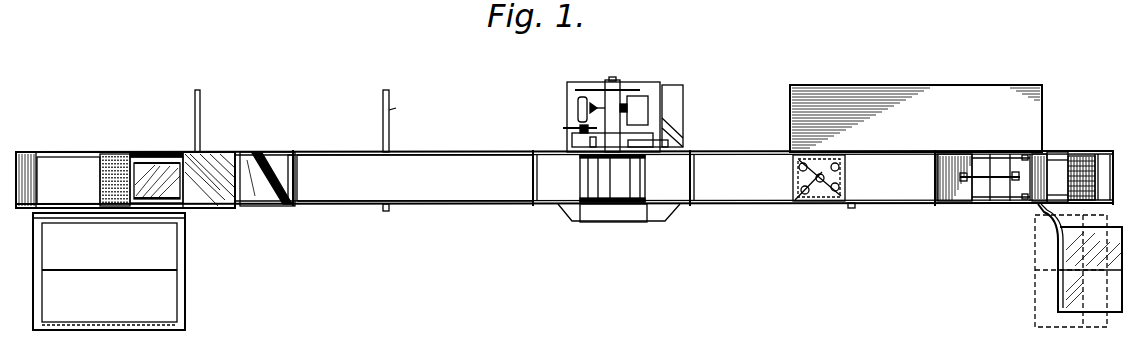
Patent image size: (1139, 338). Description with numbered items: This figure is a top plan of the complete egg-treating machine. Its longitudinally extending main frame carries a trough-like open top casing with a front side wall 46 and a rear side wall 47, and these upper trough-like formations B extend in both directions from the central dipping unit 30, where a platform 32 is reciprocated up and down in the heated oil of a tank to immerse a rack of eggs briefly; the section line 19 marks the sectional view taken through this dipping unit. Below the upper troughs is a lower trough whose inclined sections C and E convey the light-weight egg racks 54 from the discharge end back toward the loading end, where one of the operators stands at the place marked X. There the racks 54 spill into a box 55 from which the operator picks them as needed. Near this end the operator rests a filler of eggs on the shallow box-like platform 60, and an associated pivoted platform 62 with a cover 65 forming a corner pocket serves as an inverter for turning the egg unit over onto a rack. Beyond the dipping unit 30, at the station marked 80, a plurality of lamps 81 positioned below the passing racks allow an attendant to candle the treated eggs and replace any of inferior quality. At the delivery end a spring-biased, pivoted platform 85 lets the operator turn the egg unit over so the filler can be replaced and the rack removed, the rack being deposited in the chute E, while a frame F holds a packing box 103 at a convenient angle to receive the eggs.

The box 55 is at (27, 157).
The egg racks 54 is at (104, 169).
The trough section C is at (163, 156).
The platform 60 is at (216, 158).
The cover 65 is at (286, 152).
The platform 62 is at (271, 207).
The operator position X is at (235, 246).
The rear side wall 47 is at (463, 152).
The front side wall 46 is at (462, 207).
The upper trough-like formations B is at (512, 213).
The central dipping unit 30 is at (606, 114).
The platform 32 is at (640, 178).
The section line 19 is at (625, 55).
The examining means 80 is at (820, 199).
The lamps 81 is at (797, 202).
The platform 85 is at (959, 201).
The trough section E is at (1059, 156).
The packing box 103 is at (1036, 290).
The frame F is at (1040, 310).